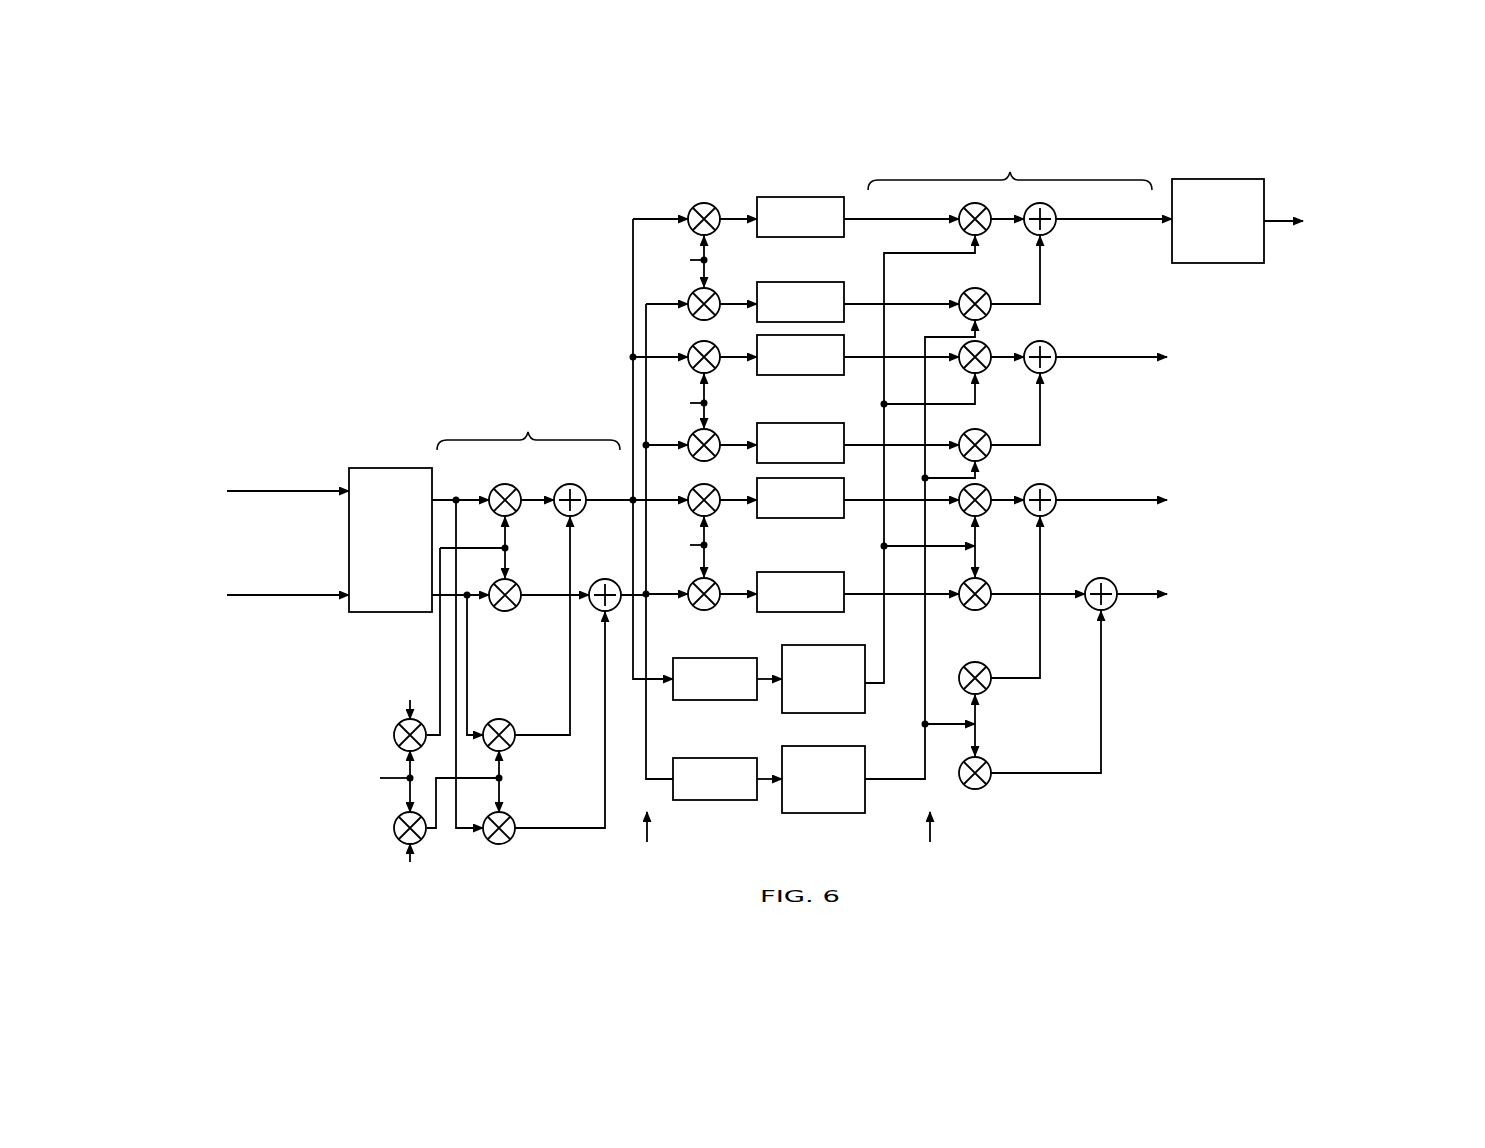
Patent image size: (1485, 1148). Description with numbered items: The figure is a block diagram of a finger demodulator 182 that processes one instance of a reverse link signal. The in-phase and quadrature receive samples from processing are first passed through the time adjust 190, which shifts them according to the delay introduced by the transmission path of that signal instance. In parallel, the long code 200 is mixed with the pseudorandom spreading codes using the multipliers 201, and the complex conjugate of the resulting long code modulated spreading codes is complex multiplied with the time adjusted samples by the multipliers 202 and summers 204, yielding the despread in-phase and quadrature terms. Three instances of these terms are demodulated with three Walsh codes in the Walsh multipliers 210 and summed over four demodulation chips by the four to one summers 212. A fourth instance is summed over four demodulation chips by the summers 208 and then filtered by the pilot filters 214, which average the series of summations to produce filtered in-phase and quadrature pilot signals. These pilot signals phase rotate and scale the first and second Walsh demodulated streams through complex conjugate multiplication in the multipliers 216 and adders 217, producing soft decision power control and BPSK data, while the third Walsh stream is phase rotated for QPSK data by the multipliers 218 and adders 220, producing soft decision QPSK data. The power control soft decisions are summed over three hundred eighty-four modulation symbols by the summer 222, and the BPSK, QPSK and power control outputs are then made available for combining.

The finger demodulator 182 is at (367, 265).
The time adjust 190 is at (352, 468).
The long code 200 is at (408, 775).
The multipliers 201 is at (394, 730).
The multipliers 202 is at (511, 485).
The summers 204 is at (576, 485).
The summers 208 is at (678, 700).
The Walsh weighting multipliers 210 is at (695, 205).
The 4 to 1 summers 212 is at (772, 237).
The pilot filters 214 is at (788, 713).
The multipliers 216 is at (968, 233).
The adders 217 is at (1050, 235).
The multipliers 218 is at (985, 485).
The adders 220 is at (1048, 485).
The 384 to 1 summer 222 is at (1190, 263).